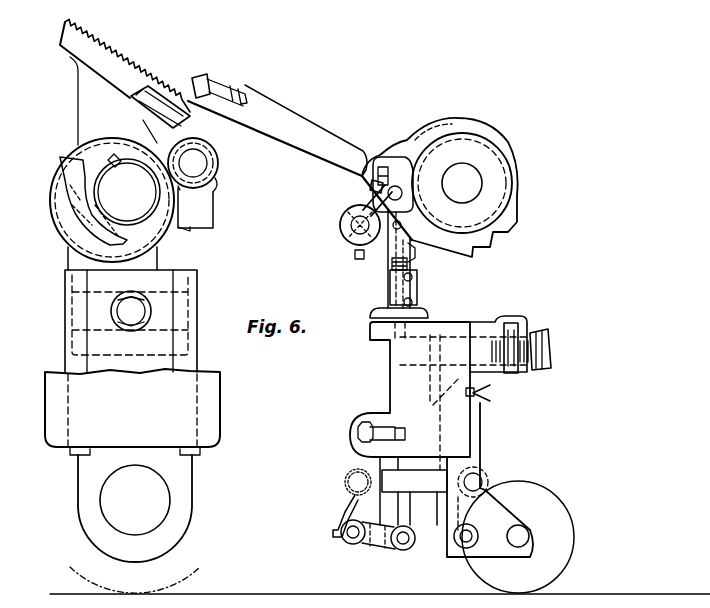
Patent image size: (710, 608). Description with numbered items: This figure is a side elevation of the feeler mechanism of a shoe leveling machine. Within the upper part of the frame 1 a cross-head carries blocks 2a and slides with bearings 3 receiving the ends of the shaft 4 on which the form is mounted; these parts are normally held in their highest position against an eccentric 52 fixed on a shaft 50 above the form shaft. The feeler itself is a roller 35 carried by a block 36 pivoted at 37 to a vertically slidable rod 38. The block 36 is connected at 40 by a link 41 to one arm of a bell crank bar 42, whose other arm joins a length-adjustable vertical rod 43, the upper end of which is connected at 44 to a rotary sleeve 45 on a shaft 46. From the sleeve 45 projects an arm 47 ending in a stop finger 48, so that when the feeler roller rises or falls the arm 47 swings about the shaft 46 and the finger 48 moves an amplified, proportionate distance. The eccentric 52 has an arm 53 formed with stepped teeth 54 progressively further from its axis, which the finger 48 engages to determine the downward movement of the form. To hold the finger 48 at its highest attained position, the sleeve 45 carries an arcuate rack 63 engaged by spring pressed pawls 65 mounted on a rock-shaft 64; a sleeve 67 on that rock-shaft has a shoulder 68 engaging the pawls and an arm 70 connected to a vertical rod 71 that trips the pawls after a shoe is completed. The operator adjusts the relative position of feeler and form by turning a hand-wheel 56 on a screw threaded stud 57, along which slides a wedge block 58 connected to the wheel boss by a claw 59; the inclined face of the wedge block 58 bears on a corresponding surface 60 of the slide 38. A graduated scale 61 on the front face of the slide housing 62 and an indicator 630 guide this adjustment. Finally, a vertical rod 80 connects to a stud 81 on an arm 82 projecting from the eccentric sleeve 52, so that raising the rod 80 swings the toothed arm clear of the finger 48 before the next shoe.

The frame 1 is at (205, 397).
The blocks 2a is at (147, 257).
The bearings 3 is at (178, 487).
The shaft 4 is at (150, 517).
The feeler roller 35 is at (485, 570).
The block 36 is at (518, 535).
The pivot 37 is at (466, 536).
The vertically slidable rod 38 is at (482, 457).
The connection 40 is at (488, 470).
The link 41 is at (423, 480).
The bell crank bar 42 is at (345, 495).
The vertical rod 43 is at (398, 257).
The connection 44 is at (373, 177).
The rotary sleeve 45 is at (422, 135).
The shaft 46 is at (462, 185).
The arm 47 is at (293, 137).
The stop finger 48 is at (210, 115).
The shaft 50 is at (110, 173).
The eccentric 52 is at (62, 183).
The arm 53 is at (92, 87).
The stepped teeth 54 is at (112, 52).
The hand-wheel 56 is at (540, 330).
The screw threaded stud 57 is at (478, 348).
The wedge block 58 is at (470, 367).
The claw 59 is at (508, 323).
The inclined surface 60 is at (470, 450).
The graduated scale 61 is at (480, 405).
The slide housing 62 is at (455, 447).
The arcuate rack 63 is at (370, 188).
The indicator 630 is at (480, 395).
The rock-shaft 64 is at (358, 223).
The spring pressed pawls 65 is at (365, 207).
The sleeve 67 is at (367, 237).
The shoulder 68 is at (355, 253).
The arm 70 is at (392, 254).
The vertical rod 71 is at (407, 252).
The vertical rod 80 is at (197, 207).
The stud 81 is at (193, 163).
The arm 82 is at (212, 185).